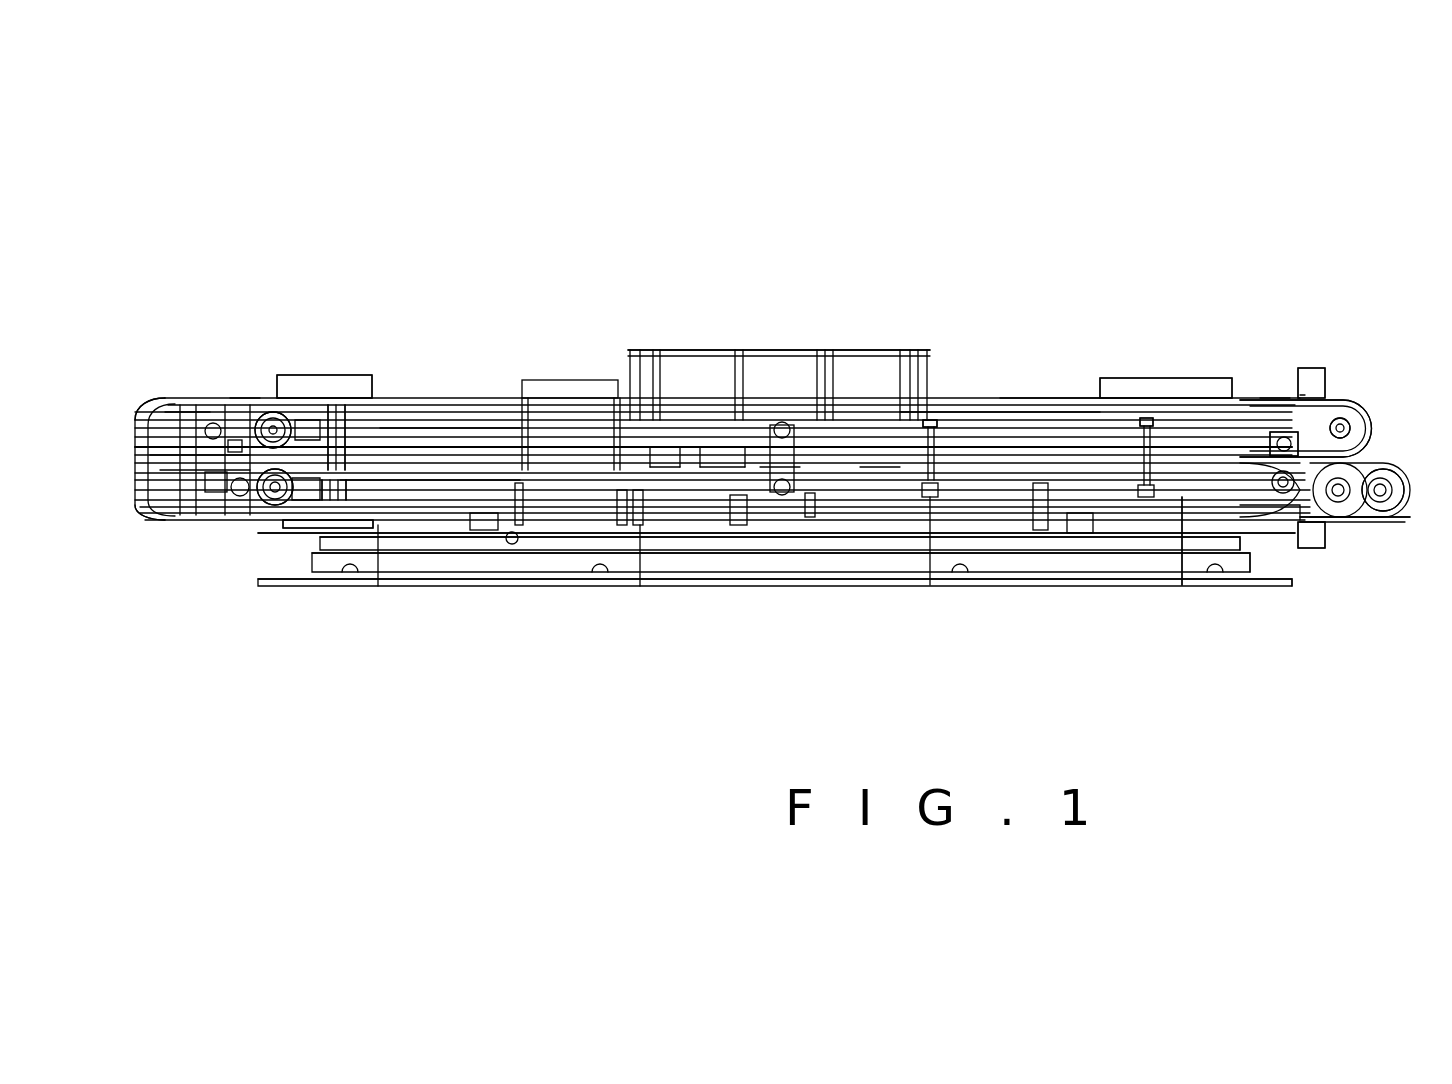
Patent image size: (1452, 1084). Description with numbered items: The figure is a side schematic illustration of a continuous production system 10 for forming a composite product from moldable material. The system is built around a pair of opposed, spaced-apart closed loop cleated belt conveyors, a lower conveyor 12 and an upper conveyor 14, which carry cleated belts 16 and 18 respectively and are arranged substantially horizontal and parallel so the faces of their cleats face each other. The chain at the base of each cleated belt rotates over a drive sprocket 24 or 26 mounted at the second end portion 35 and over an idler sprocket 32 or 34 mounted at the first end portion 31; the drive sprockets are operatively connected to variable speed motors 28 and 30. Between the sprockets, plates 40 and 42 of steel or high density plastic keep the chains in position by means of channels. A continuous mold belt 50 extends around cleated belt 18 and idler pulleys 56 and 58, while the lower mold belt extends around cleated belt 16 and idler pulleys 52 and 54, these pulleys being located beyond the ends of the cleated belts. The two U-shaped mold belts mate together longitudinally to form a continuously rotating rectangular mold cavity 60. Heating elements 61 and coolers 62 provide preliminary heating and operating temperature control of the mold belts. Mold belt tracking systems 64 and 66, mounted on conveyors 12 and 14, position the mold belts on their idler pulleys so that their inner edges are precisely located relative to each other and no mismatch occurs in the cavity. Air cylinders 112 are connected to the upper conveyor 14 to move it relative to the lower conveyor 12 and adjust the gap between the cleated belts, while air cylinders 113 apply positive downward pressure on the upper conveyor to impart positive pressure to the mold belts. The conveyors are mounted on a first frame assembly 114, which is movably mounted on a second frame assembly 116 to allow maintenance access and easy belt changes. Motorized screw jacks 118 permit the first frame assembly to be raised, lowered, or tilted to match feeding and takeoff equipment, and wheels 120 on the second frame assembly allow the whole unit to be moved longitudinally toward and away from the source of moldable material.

The continuous production system 10 is at (1303, 192).
The closed loop cleated belt conveyor 12 is at (1113, 530).
The closed loop cleated belt conveyor 14 is at (1045, 398).
The cleated belt 16 is at (1262, 503).
The cleated belt 18 is at (1237, 398).
The drive sprocket 24 is at (258, 493).
The drive sprocket 26 is at (265, 393).
The variable speed motor 28 is at (380, 525).
The variable speed motor 30 is at (378, 398).
The first end portion 31 is at (1302, 320).
The idler sprocket 32 is at (1340, 523).
The idler sprocket 34 is at (1330, 388).
The second end portion 35 is at (250, 343).
The plate 40 is at (410, 480).
The plate 42 is at (425, 398).
The continuous mold belt 50 is at (1000, 398).
The idler pulley 52 is at (1395, 470).
The idler pulley 54 is at (160, 515).
The idler pulley 56 is at (1385, 415).
The idler pulley 58 is at (178, 402).
The mold cavity 60 is at (1162, 535).
The heating element 61 is at (1133, 378).
The cooler 62 is at (330, 376).
The mold belt tracking system 64 is at (1335, 548).
The mold belt tracking system 66 is at (1312, 368).
The air cylinder 112 is at (730, 368).
The air cylinder 113 is at (963, 398).
The first frame assembly 114 is at (585, 545).
The second frame assembly 116 is at (775, 565).
The motorized screw jack 118 is at (528, 530).
The wheel 120 is at (1215, 580).